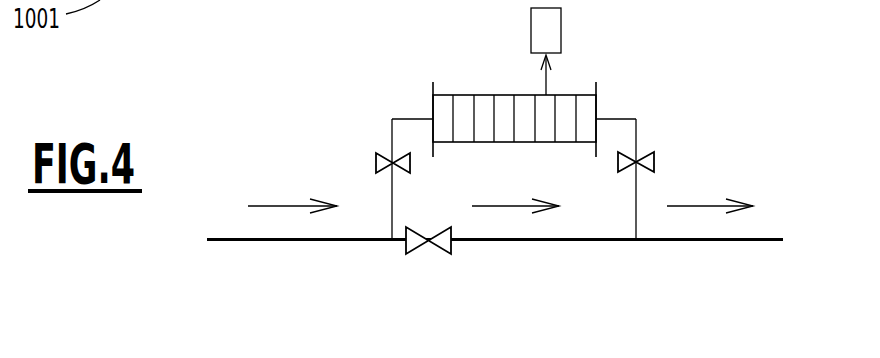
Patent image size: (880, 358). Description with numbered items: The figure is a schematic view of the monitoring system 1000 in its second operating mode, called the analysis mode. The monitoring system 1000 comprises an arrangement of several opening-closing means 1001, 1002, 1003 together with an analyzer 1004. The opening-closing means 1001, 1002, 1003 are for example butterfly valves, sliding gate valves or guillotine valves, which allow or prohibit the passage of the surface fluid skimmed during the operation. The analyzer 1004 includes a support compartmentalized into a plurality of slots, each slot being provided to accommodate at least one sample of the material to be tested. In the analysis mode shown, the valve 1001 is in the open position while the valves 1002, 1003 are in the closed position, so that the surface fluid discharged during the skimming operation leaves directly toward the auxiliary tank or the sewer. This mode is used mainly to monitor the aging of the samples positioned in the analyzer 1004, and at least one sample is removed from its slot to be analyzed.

The monitoring system 1000 is at (599, 55).
The opening-closing means 1001 is at (397, 256).
The opening-closing means 1002 is at (372, 158).
The opening-closing means 1003 is at (658, 160).
The analyzer 1004 is at (514, 145).